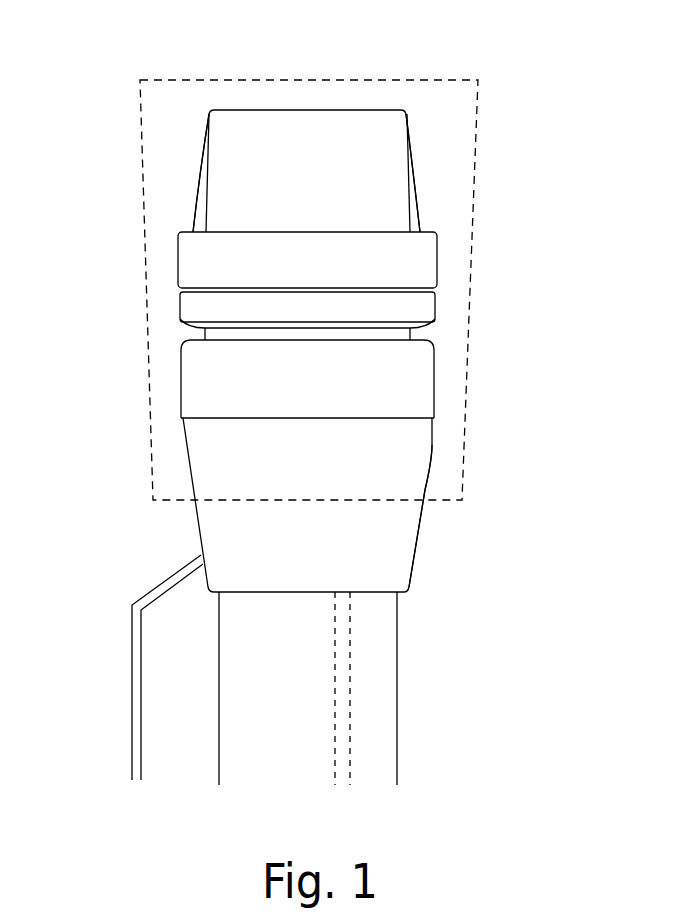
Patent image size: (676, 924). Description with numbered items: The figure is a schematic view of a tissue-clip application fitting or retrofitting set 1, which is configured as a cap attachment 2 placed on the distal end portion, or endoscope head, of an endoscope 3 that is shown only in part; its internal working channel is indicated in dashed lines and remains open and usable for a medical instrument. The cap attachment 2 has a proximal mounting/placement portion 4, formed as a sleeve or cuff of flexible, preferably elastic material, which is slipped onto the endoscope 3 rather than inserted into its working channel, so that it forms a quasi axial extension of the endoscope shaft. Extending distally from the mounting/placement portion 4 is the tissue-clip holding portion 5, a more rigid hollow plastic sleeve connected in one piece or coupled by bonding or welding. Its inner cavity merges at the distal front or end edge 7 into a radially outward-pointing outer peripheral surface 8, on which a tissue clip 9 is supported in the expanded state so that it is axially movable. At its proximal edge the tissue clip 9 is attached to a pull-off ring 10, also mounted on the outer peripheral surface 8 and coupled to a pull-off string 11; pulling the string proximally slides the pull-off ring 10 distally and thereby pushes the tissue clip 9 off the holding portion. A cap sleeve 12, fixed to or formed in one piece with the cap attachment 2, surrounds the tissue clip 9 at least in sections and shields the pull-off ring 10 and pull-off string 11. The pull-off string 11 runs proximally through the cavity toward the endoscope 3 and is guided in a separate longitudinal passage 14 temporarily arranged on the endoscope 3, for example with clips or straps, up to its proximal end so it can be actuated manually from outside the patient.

The tissue-clip application fitting or retrofitting set 1 is at (496, 87).
The cap attachment 2 is at (403, 563).
The endoscope 3 is at (382, 735).
The mounting/placement portion 4 is at (193, 440).
The tissue-clip holding portion 5 is at (192, 385).
The distal front or end edge 7 is at (318, 108).
The outer peripheral surface 8 is at (413, 190).
The tissue clip 9 is at (188, 262).
The pull-off ring 10 is at (422, 311).
The pull-off string 11 is at (195, 210).
The cap sleeve 12 is at (137, 101).
The longitudinal passage 14 is at (136, 682).